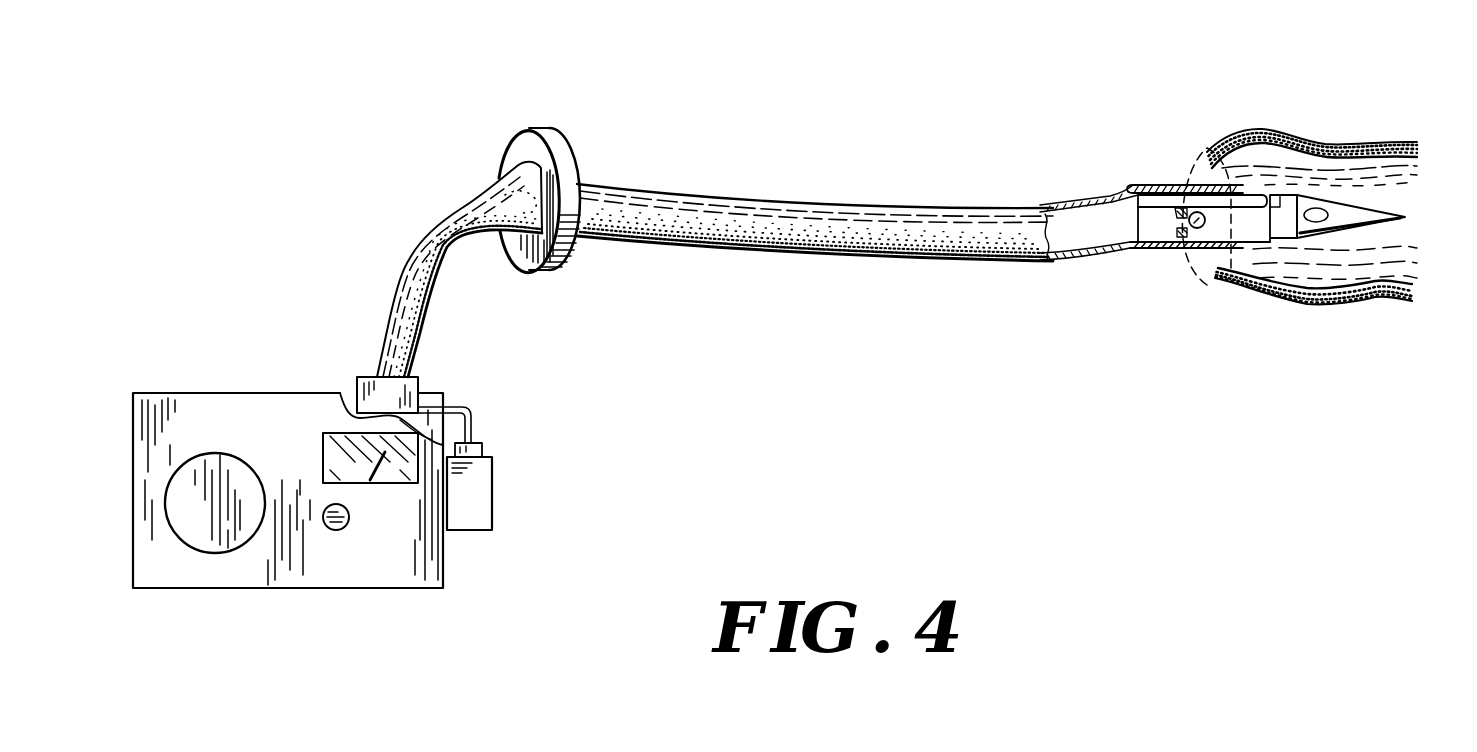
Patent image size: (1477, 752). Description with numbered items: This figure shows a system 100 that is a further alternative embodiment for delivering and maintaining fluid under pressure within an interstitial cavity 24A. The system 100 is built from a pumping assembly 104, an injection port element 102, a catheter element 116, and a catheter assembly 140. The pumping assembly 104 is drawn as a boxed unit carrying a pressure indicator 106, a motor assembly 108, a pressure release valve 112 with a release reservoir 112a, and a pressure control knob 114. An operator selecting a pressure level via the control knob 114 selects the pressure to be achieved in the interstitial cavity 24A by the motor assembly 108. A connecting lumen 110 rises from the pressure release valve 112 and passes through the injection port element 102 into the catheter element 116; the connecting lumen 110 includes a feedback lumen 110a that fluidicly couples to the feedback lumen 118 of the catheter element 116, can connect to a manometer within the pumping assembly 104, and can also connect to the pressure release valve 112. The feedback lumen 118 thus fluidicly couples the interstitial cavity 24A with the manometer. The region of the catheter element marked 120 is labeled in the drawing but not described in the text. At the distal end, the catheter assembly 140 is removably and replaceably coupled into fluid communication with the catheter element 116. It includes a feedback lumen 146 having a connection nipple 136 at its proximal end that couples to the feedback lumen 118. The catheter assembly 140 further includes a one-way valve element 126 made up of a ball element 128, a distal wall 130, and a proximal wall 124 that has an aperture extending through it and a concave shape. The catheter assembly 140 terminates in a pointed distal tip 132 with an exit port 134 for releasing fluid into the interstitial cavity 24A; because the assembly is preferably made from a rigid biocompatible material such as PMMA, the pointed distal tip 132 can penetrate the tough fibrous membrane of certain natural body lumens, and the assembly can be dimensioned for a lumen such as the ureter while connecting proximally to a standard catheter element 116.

The system 100 is at (815, 78).
The injection port element 102 is at (570, 153).
The pumping assembly 104 is at (258, 393).
The pressure indicator 106 is at (443, 445).
The motor assembly 108 is at (192, 468).
The connecting lumen 110 is at (423, 325).
The feedback lumen 110a is at (403, 263).
The pressure release valve 112 is at (404, 389).
The release reservoir 112a is at (480, 473).
The pressure control knob 114 is at (347, 527).
The catheter element 116 is at (750, 197).
The feedback lumen 118 is at (855, 212).
The shaft body 120 is at (930, 233).
The proximal wall 124 is at (1268, 130).
The one-way valve element 126 is at (1160, 255).
The ball element 128 is at (1200, 228).
The distal wall 130 is at (1217, 233).
The pointed distal tip 132 is at (1318, 237).
The exit port 134 is at (1377, 303).
The connection nipple 136 is at (1130, 197).
The catheter assembly 140 is at (1273, 232).
The feedback lumen 146 is at (1162, 200).
The interstitial cavity 24A is at (1343, 173).